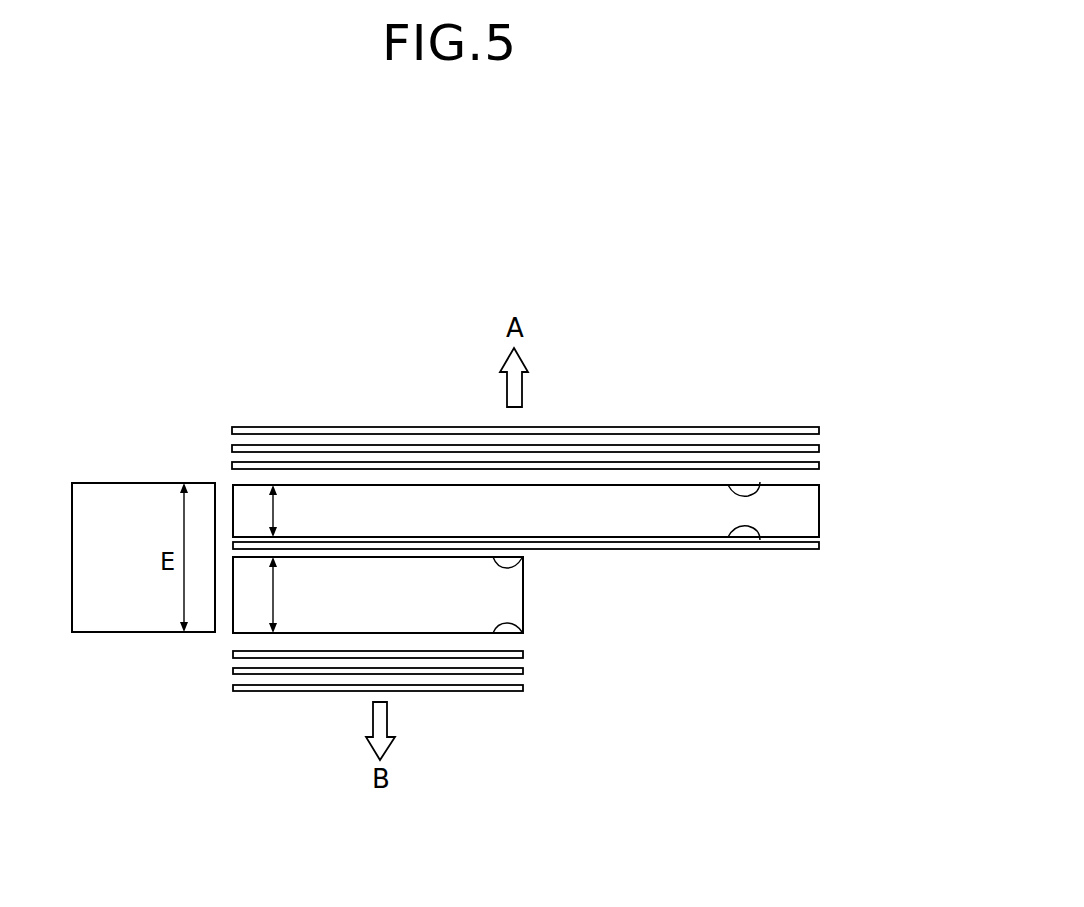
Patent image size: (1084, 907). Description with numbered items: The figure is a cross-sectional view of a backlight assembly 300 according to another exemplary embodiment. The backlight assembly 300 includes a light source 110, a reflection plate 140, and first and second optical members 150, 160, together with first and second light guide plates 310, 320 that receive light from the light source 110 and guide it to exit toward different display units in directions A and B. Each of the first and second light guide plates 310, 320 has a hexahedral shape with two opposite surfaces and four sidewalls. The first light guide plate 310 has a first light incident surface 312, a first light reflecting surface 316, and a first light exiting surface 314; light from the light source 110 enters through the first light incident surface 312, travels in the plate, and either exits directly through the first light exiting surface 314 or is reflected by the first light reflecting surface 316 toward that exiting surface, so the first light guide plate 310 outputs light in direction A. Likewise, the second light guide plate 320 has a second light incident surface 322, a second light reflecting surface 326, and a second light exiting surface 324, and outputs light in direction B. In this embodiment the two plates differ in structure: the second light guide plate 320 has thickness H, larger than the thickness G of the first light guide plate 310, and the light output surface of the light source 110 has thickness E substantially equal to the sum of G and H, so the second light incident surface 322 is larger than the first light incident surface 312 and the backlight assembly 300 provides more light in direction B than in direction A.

The backlight assembly 300 is at (523, 249).
The light source 110 is at (110, 610).
The reflection plate 140 is at (819, 547).
The first optical member 150 is at (830, 429).
The second optical member 160 is at (530, 653).
The first light guide plate 310 is at (824, 503).
The first light incident surface 312 is at (232, 490).
The first light exiting surface 314 is at (760, 482).
The first light reflecting surface 316 is at (760, 540).
The second light guide plate 320 is at (530, 613).
The second light incident surface 322 is at (232, 630).
The second light exiting surface 324 is at (522, 632).
The second light reflecting surface 326 is at (522, 558).